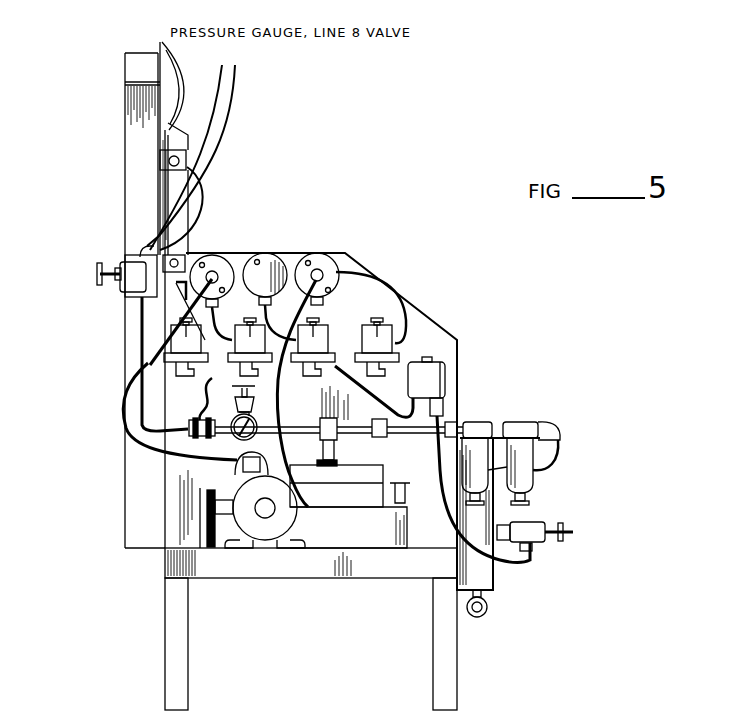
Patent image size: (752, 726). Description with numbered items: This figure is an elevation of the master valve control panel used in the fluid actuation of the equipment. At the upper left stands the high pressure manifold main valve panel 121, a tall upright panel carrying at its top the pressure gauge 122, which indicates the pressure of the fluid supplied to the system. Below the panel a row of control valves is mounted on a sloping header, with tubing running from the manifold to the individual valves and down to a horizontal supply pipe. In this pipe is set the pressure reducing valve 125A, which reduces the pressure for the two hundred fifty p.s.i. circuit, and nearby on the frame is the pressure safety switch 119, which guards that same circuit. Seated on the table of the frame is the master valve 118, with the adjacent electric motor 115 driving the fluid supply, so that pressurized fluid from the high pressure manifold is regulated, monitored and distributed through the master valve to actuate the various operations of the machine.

The pressure gauge 122 is at (172, 80).
The high pressure manifold main valve panel 121 is at (138, 155).
The pressure reducing valve 125A is at (233, 432).
The master valve 118 is at (372, 485).
The motor 115 is at (284, 517).
The pressure safety switch 119 is at (431, 380).